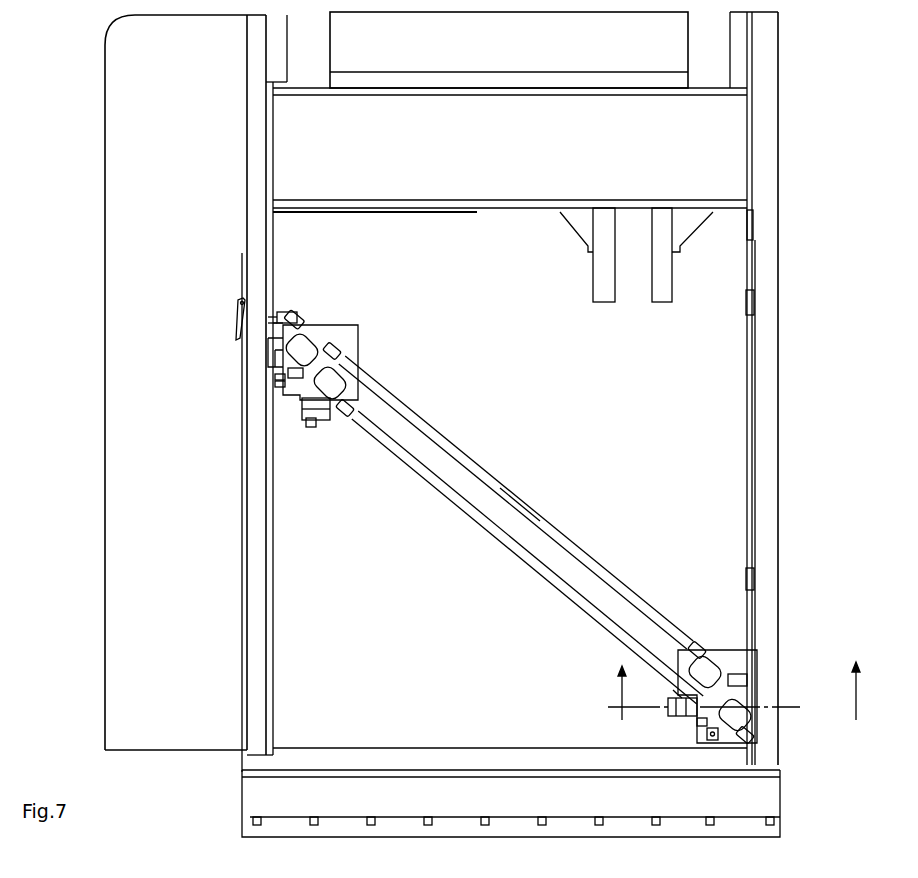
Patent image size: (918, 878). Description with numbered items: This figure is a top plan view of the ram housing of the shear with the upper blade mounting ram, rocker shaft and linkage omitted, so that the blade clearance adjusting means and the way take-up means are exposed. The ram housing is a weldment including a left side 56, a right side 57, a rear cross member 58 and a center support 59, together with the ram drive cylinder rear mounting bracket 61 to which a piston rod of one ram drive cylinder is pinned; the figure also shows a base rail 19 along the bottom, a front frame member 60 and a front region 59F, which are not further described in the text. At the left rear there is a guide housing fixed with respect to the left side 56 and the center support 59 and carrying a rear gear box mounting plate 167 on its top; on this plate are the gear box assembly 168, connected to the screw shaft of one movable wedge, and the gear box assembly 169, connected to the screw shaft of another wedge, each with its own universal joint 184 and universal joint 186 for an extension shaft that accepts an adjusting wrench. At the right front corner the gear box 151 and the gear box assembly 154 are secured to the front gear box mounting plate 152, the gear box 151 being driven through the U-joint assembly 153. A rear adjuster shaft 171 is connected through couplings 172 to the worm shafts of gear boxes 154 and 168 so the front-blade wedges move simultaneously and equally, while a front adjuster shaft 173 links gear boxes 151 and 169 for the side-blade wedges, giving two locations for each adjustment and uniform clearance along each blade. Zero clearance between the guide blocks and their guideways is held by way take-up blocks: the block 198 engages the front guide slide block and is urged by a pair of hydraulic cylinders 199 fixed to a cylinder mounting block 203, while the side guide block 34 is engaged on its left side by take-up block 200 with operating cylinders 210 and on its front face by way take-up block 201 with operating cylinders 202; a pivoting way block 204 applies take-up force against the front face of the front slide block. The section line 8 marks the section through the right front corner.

The left side 56 is at (247, 204).
The right side 57 is at (775, 530).
The rear cross member 58 is at (728, 200).
The center support 59 is at (697, 364).
The frame front portion 59F is at (528, 530).
The bottom frame member 60 is at (385, 760).
The ram drive cylinder rear mounting bracket 61 is at (655, 243).
The base rail 19 is at (509, 808).
The side guide block 34 is at (297, 393).
The rear gear box mounting plate 167 is at (365, 340).
The gear box assembly 168 is at (312, 345).
The gear box assembly 169 is at (345, 383).
The rear adjuster shaft 171 is at (587, 548).
The couplings 172 is at (335, 348).
The front adjuster shaft 173 is at (478, 523).
The universal joint 184 is at (283, 318).
The universal joint 186 is at (293, 372).
The way take-up block 198 is at (707, 735).
The hydraulic cylinders 199 is at (664, 720).
The take-up block 200 is at (283, 384).
The way take-up block 201 is at (306, 412).
The operating cylinders 202 is at (310, 420).
The cylinder mounting block 203 is at (673, 690).
The pivoting way block 204 is at (699, 726).
The operating cylinders 210 is at (275, 378).
The gear box 151 is at (740, 717).
The front gear box mounting plate 152 is at (743, 668).
The U-joint assembly 153 is at (745, 742).
The gear box assembly 154 is at (737, 660).
The section line 8- 8 is at (738, 691).